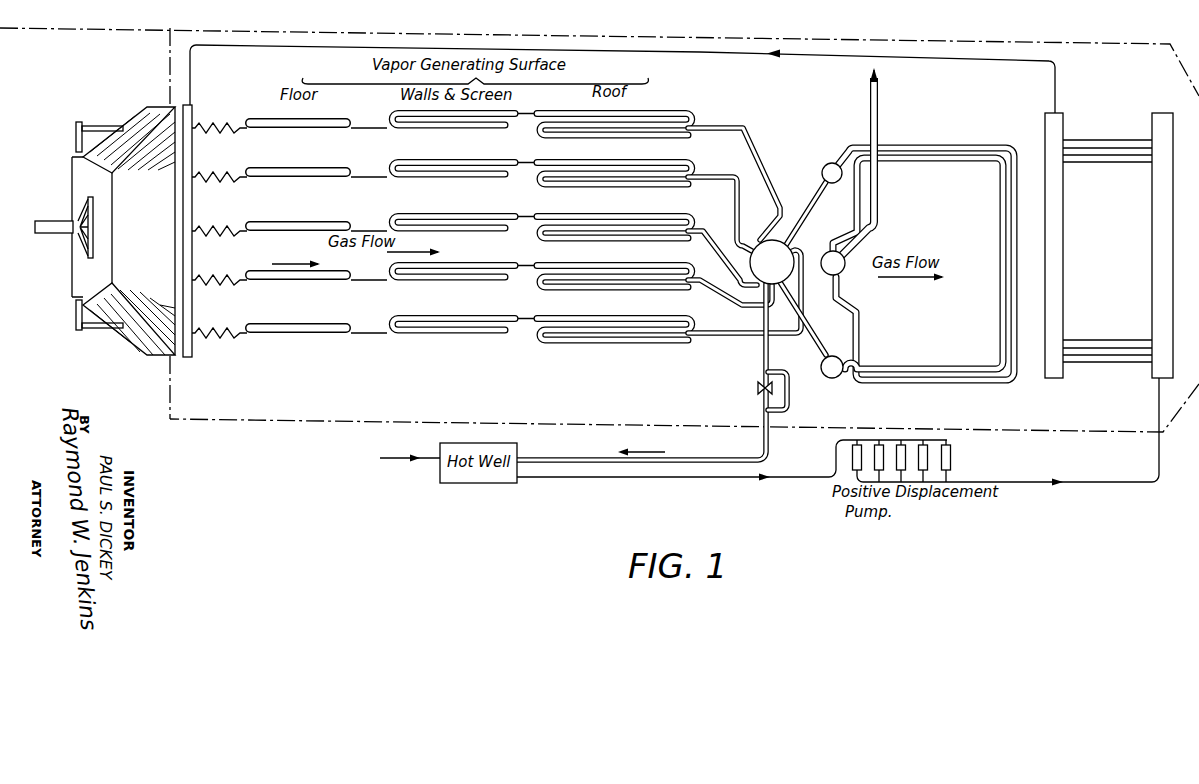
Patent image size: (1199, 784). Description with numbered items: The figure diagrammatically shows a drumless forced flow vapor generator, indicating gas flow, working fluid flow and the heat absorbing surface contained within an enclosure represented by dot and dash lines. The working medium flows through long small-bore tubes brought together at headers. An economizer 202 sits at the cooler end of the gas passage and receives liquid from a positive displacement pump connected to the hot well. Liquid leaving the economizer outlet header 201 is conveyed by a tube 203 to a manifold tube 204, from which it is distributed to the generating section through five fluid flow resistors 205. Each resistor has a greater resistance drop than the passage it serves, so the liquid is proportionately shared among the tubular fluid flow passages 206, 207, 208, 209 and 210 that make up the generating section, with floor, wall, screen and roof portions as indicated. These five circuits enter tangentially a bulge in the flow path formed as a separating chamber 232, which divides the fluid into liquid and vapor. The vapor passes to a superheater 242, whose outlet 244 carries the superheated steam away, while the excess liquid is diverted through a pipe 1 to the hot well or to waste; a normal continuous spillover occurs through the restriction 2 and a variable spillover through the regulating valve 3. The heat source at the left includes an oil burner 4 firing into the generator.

The pipe 1 is at (770, 442).
The restriction 2 is at (792, 384).
The regulating valve 3 is at (757, 392).
The oil burner 4 is at (62, 235).
The economizer outlet header 201 is at (1052, 380).
The economizer 202 is at (1109, 241).
The tube 203 is at (986, 62).
The manifold tube 204 is at (195, 110).
The fluid flow resistors 205 is at (213, 342).
The tubular fluid flow passage 206 is at (304, 128).
The tubular fluid flow passage 207 is at (304, 179).
The tubular fluid flow passage 208 is at (302, 237).
The tubular fluid flow passage 209 is at (304, 287).
The tubular fluid flow passage 210 is at (312, 323).
The separating chamber 232 is at (776, 232).
The superheater 242 is at (917, 238).
The superheated steam outlet 244 is at (870, 104).